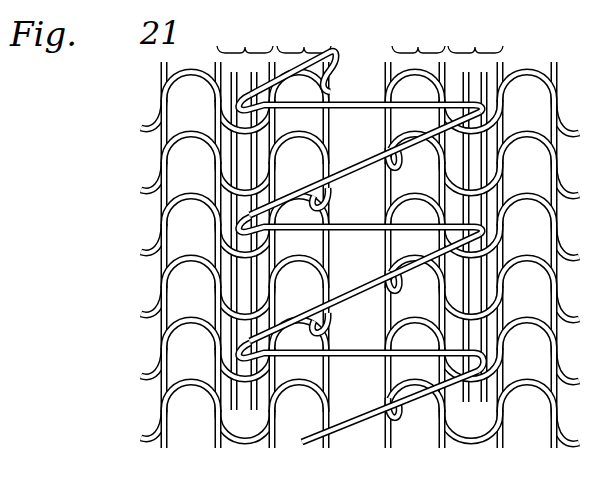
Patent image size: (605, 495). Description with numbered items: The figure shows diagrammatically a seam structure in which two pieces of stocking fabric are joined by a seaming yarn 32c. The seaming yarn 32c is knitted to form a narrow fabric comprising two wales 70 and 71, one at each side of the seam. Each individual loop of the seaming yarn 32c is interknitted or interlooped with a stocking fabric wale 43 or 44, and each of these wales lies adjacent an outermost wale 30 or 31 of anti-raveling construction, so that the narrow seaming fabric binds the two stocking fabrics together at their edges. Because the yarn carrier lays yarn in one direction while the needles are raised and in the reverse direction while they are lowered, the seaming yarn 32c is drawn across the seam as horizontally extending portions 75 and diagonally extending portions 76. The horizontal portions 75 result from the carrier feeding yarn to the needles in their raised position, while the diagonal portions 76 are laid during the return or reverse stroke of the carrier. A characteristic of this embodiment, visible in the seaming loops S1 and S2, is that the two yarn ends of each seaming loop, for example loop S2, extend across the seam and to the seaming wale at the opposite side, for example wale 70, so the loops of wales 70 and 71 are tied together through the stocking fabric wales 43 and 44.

The stocking fabric wale 43 is at (245, 39).
The outermost wale 30 is at (301, 242).
The outermost wale 31 is at (444, 252).
The stocking fabric wale 44 is at (475, 39).
The seaming yarn 32c is at (357, 422).
The horizontal portion 75 is at (358, 350).
The diagonal portion 76 is at (352, 292).
The seaming wale 70 is at (230, 414).
The seaming wale 71 is at (457, 409).
The seaming loop S1 is at (490, 92).
The seaming loop S2 is at (490, 174).